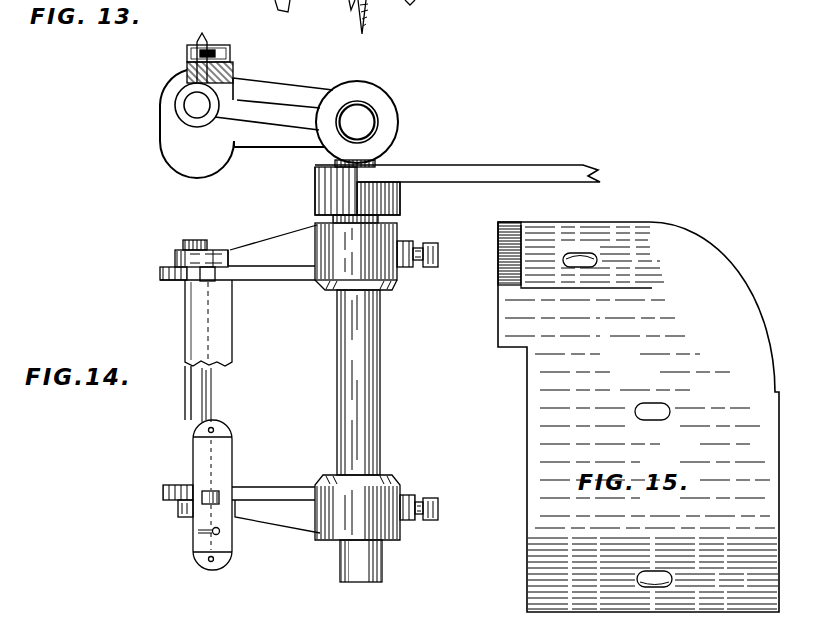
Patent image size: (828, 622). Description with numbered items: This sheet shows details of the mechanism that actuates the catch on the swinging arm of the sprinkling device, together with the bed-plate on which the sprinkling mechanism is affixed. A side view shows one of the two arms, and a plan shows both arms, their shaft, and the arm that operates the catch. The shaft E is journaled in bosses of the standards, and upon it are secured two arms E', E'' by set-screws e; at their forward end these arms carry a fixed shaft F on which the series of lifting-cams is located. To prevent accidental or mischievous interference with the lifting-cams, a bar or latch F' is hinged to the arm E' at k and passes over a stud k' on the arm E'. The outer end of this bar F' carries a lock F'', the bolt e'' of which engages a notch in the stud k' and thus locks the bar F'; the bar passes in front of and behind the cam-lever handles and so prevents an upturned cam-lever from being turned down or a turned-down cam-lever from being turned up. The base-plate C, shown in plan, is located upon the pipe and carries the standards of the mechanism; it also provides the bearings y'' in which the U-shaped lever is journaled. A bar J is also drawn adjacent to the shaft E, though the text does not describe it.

In FIG. 13, the fixed shaft F is at (171, 105).
In FIG. 14, the fixed shaft F is at (204, 394).
In FIG. 13, the bar or latch F' is at (225, 65).
In FIG. 14, the bar or latch F' is at (208, 323).
In FIG. 13, the lock F'' is at (216, 53).
In FIG. 14, the lock F'' is at (180, 520).
In FIG. 13, the bolt e'' is at (235, 43).
In FIG. 13, the arm E' is at (246, 119).
In FIG. 14, the arm E' is at (276, 496).
In FIG. 13, the shaft E is at (357, 122).
In FIG. 14, the shaft E is at (357, 371).
In FIG. 14, the bar J is at (457, 162).
In FIG. 14, the set-screw e is at (429, 380).
In FIG. 14, the arm E'' is at (238, 266).
In FIG. 14, the hinge k is at (194, 254).
In FIG. 14, the stud k' is at (212, 495).
In FIG. 15, the base-plate C is at (638, 417).
In FIG. 15, the bearings y'' is at (522, 253).